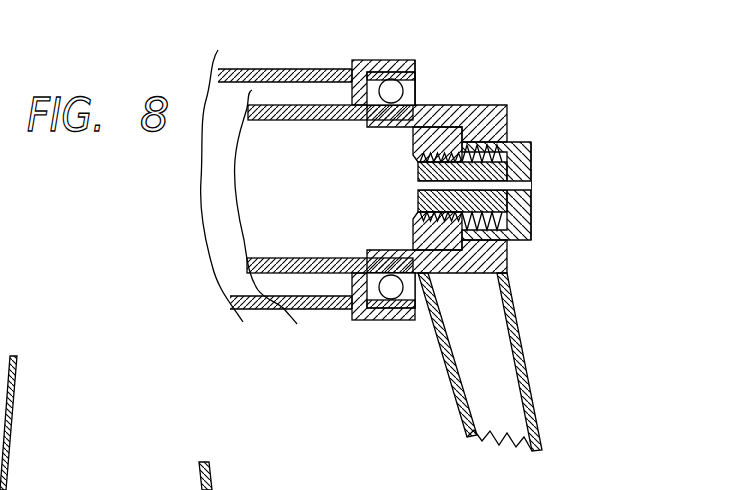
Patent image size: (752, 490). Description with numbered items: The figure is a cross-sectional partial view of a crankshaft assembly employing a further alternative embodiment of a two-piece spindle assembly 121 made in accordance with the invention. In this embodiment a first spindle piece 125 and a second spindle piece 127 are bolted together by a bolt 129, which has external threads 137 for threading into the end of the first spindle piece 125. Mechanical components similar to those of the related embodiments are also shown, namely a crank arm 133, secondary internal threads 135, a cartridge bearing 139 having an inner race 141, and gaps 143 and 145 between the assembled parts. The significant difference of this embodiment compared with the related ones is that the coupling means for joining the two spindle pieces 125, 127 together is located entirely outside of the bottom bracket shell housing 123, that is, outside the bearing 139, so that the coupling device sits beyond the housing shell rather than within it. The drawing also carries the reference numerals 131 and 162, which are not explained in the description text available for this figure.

The two-piece spindle assembly 121 is at (443, 231).
The bottom bracket shell housing 123 is at (313, 309).
The first spindle piece 125 is at (255, 274).
The second spindle piece 127 is at (493, 105).
The bolt 129 is at (531, 212).
The bore 131 is at (427, 185).
The crank arm 133 is at (452, 385).
The secondary internal threads 135 is at (508, 140).
The external threads 137 is at (425, 222).
The cartridge bearing 139 is at (415, 86).
The inner race 141 is at (370, 105).
The gap 143 is at (460, 138).
The gap 145 is at (405, 123).
The tube 162 is at (17, 489).